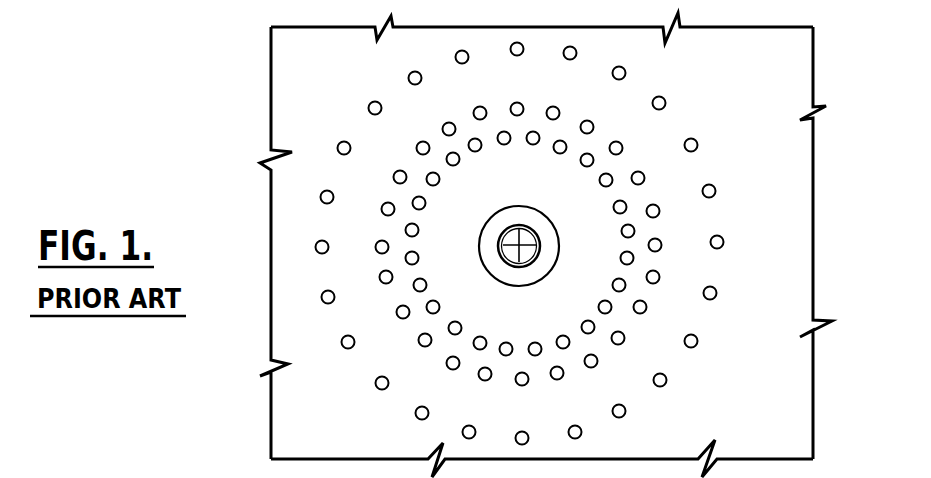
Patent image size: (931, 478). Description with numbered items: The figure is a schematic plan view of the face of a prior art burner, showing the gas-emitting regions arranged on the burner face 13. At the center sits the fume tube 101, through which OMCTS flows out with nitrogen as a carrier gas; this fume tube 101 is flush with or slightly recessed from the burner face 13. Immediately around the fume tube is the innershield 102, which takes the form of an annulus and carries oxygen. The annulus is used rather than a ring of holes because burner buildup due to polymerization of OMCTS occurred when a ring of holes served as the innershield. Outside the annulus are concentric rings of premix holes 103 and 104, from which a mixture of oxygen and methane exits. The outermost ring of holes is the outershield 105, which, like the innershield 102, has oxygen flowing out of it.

The burner face 13 is at (782, 419).
The fume tube 101 is at (503, 228).
The innershield 102 is at (548, 273).
The premix holes 103 is at (635, 231).
The premix holes 104 is at (645, 177).
The outershield 105 is at (665, 99).